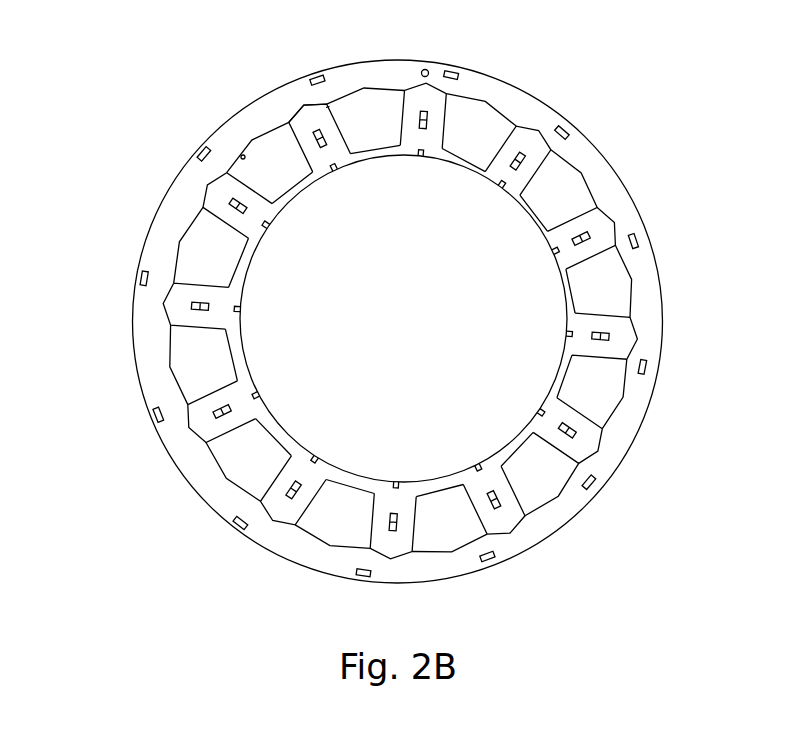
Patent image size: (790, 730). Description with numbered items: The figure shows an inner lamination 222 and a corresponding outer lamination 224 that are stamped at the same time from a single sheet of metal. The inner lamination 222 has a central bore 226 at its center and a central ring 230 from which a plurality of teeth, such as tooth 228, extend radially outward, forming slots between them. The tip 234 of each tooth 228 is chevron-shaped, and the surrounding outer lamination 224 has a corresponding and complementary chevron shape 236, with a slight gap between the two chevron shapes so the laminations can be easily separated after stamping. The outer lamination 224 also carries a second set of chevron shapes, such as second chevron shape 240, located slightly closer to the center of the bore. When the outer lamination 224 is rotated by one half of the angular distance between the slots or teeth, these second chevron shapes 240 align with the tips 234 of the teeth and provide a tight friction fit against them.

The inner lamination 222 is at (392, 285).
The outer lamination 224 is at (152, 215).
The central bore 226 is at (381, 334).
The tooth 228 is at (320, 113).
The central ring 230 is at (352, 170).
The tip 234 is at (293, 117).
The chevron shape 236 is at (323, 107).
The second chevron shape 240 is at (243, 157).